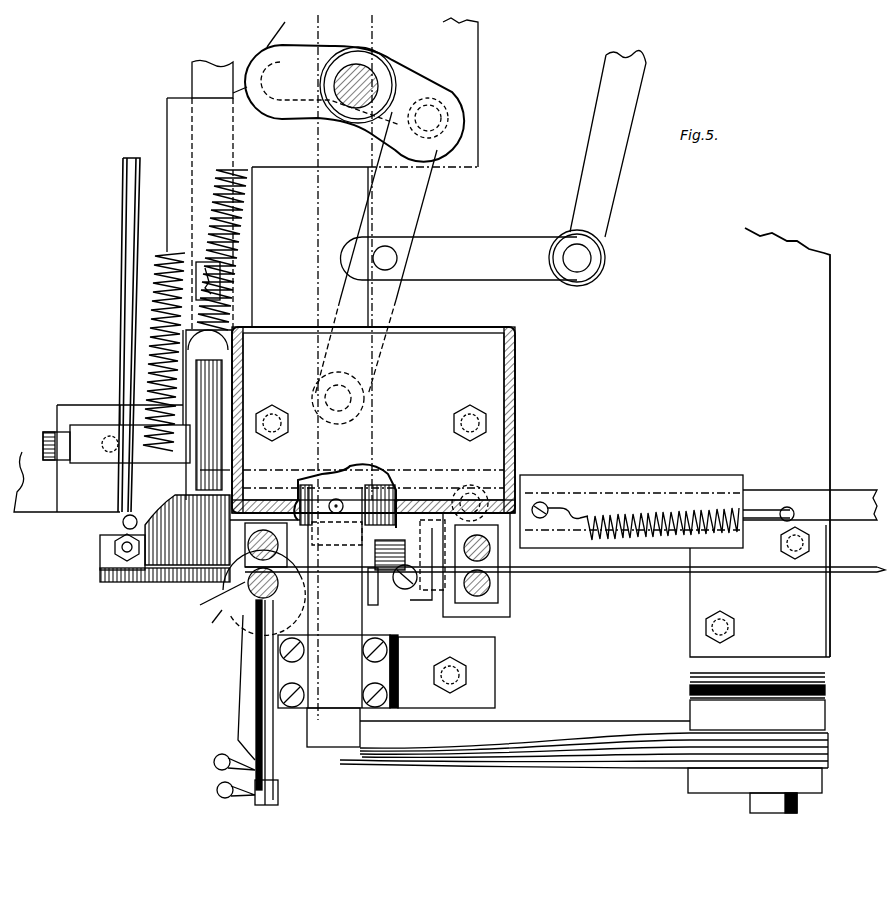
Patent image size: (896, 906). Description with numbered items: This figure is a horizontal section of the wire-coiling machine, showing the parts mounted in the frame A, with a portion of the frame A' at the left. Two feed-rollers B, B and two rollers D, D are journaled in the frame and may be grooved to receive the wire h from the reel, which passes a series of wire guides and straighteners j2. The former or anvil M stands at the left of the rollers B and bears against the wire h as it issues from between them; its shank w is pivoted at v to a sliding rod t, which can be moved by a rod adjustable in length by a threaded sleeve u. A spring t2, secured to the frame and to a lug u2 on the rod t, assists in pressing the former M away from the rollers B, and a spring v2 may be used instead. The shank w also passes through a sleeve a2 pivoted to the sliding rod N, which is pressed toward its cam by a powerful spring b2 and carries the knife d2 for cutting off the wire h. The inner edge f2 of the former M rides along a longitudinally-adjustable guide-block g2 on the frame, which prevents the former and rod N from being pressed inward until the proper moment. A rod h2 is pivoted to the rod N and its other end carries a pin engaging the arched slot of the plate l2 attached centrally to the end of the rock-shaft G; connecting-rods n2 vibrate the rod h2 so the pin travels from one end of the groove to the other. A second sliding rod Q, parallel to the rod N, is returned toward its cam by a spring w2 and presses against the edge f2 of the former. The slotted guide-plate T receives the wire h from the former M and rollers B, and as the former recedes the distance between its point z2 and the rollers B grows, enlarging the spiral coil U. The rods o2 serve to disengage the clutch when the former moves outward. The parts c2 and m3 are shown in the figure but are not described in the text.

The sliding rod Q is at (207, 195).
The plate l2 is at (354, 92).
The rock-shaft G is at (358, 85).
The spring v2 is at (428, 118).
The frame A is at (531, 367).
The sliding rod N is at (334, 475).
The rod h2 is at (376, 253).
The sleeve a2 is at (345, 458).
The threaded sleeve u is at (380, 505).
The shank w is at (265, 538).
The connecting-rods n2 is at (494, 168).
The spring t2 is at (631, 511).
The sliding rod t is at (560, 520).
The lug u2 is at (810, 504).
The wire h is at (565, 569).
The clamp c2 is at (410, 560).
The knife d2 is at (359, 586).
The rollers D is at (476, 565).
The pivot v is at (470, 502).
The spring b2 is at (565, 724).
The rods o2 is at (124, 343).
The spring w2 is at (222, 240).
The guide-block g2 is at (116, 358).
The frame part A' is at (98, 421).
The inner edge f2 is at (208, 415).
The wire guides and straighteners j2 is at (215, 483).
The former M is at (187, 530).
The pivot bolt m3 is at (104, 570).
The rollers B is at (263, 564).
The slotted guide-plate T is at (259, 677).
The point of the former z2 is at (222, 587).
The spiral coil U is at (211, 625).